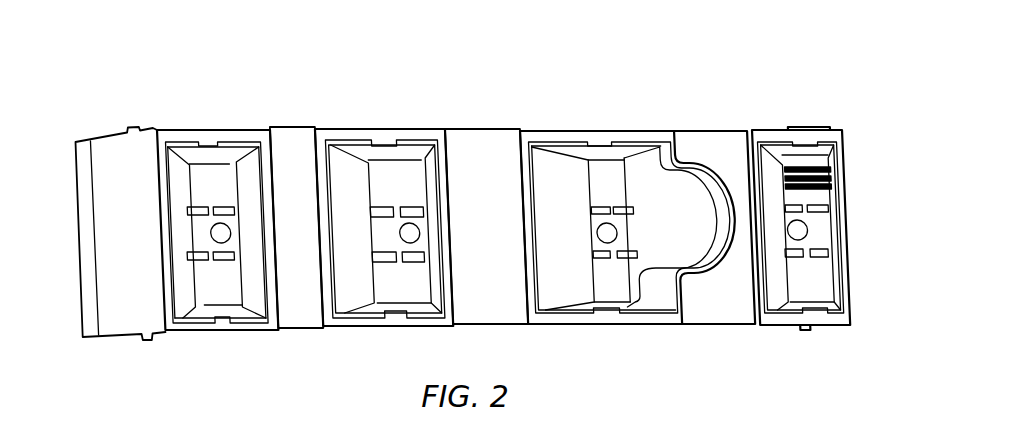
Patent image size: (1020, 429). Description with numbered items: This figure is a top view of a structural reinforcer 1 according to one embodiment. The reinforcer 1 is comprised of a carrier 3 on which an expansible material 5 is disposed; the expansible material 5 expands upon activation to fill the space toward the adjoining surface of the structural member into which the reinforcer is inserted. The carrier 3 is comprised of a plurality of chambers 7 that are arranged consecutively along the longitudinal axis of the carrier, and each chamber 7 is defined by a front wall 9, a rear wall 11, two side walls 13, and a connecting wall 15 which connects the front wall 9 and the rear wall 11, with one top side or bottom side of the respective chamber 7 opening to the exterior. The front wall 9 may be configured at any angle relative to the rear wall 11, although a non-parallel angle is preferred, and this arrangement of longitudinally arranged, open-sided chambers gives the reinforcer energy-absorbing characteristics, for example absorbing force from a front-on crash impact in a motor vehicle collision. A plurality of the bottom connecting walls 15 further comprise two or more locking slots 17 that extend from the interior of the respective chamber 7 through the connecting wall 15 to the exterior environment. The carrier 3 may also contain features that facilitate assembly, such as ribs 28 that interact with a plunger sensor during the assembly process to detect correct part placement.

The structural reinforcer 1 is at (826, 78).
The carrier 3 is at (76, 245).
The expansible material 5 is at (485, 126).
The chamber 7 is at (227, 292).
The front wall 9 is at (192, 188).
The rear wall 11 is at (245, 166).
The side wall 13 is at (190, 160).
The connecting wall 15 is at (210, 178).
The locking slot 17 is at (382, 207).
The rib 28 is at (828, 182).